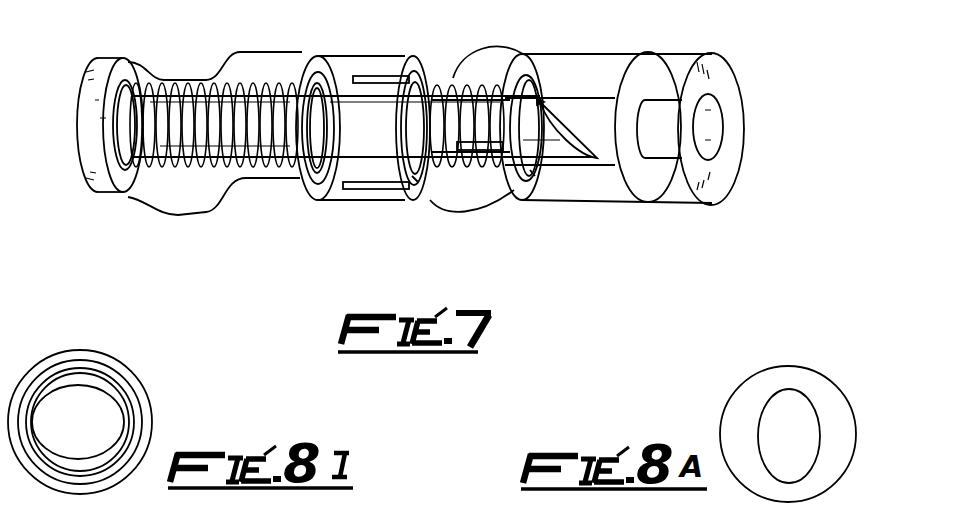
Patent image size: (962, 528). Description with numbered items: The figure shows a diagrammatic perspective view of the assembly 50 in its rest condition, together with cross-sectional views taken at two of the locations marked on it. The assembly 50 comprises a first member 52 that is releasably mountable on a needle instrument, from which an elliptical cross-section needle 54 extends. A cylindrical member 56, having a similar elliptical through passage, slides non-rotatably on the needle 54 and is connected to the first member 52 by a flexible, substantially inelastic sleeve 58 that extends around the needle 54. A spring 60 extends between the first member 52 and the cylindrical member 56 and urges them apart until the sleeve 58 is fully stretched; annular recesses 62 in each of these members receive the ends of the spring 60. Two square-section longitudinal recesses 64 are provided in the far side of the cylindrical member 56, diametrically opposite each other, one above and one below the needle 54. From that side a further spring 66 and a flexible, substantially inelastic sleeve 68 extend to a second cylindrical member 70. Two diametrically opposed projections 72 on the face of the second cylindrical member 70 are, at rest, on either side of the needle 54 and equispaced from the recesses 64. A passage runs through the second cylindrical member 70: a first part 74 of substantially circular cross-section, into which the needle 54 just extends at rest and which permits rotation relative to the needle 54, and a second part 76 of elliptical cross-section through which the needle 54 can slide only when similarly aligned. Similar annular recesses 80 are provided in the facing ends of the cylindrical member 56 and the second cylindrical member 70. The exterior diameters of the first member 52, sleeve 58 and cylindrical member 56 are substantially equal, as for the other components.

In FIG. 7, the assembly 50 is at (622, 231).
In FIG. 7, the first member 52 is at (101, 62).
In FIG. 8I, the first member 52 is at (82, 330).
In FIG. 7, the needle 54 is at (447, 83).
In FIG. 8I, the needle 54 is at (67, 450).
In FIG. 7, the cylindrical member 56 is at (333, 53).
In FIG. 7, the flexible substantially inelastic sleeve 58 is at (252, 52).
In FIG. 7, the spring 60 is at (173, 144).
In FIG. 8I, the spring 60 is at (102, 378).
In FIG. 7, the annular recesses 62 is at (107, 139).
In FIG. 8I, the annular recesses 62 is at (127, 415).
In FIG. 7, the longitudinal recesses 64 is at (378, 77).
In FIG. 7, the further spring 66 is at (492, 165).
In FIG. 7, the flexible substantially inelastic sleeve 68 is at (517, 52).
In FIG. 7, the second cylindrical member 70 is at (562, 202).
In FIG. 8A, the second cylindrical member 70 is at (792, 366).
In FIG. 7, the projections 72 is at (467, 148).
In FIG. 7, the first part of the passage 74 is at (610, 161).
In FIG. 7, the second part of the passage 76 is at (660, 144).
In FIG. 8A, the second part of the passage 76 is at (798, 402).
In FIG. 7, the annular recesses 80 is at (418, 181).